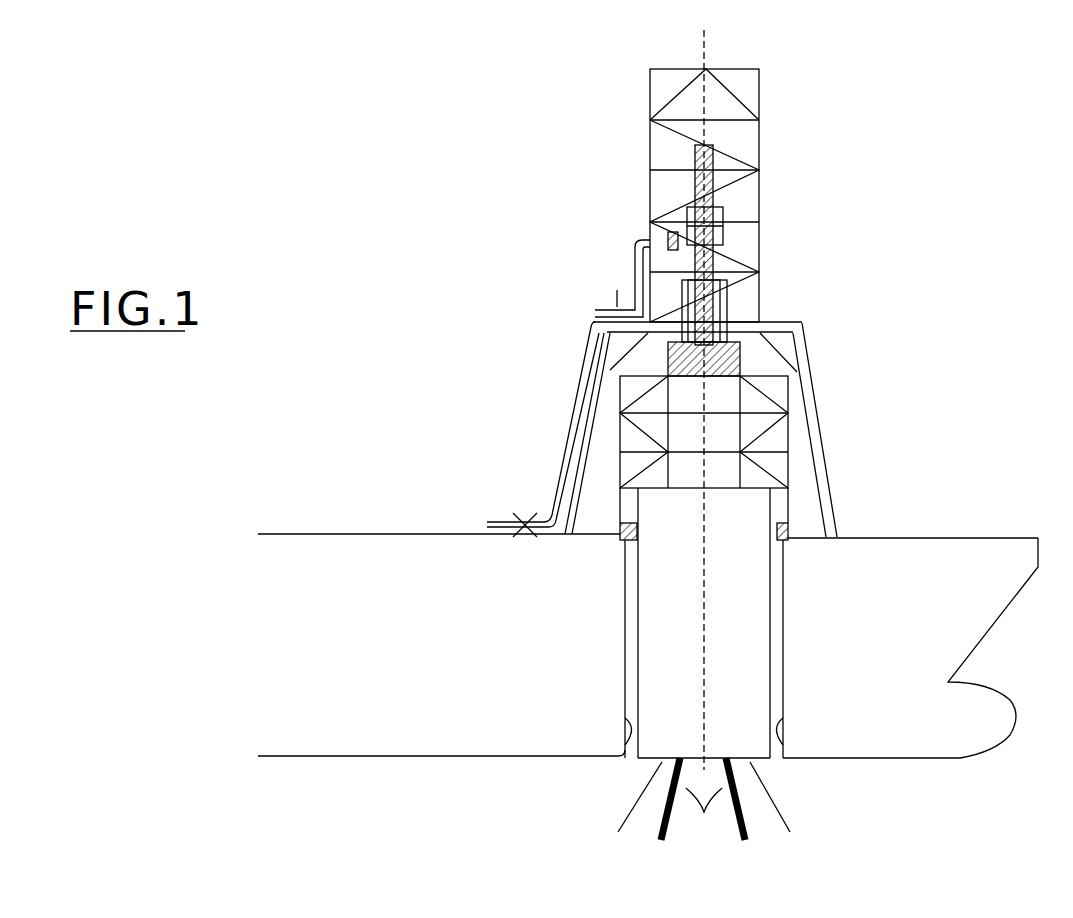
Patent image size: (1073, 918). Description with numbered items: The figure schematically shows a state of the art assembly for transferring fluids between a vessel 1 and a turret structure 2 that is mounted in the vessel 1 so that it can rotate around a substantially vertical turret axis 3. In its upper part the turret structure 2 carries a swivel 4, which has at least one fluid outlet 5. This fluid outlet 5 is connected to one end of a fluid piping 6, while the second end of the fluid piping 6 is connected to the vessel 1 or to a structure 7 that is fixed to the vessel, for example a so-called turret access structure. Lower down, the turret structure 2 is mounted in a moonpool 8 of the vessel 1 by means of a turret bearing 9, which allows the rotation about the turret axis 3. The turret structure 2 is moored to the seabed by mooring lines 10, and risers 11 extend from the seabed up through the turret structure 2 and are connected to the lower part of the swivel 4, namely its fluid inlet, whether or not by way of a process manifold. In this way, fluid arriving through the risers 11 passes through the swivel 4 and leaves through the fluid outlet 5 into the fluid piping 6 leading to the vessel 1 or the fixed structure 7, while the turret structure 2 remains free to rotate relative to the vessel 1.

The vessel 1 is at (312, 545).
The turret structure 2 is at (787, 441).
The turret axis 3 is at (709, 50).
The swivel 4 is at (725, 237).
The fluid outlet 5 is at (682, 232).
The fluid piping 6 is at (635, 259).
The structure 7 is at (800, 354).
The moonpool 8 is at (782, 610).
The turret bearing 9 is at (790, 530).
The mooring lines 10 is at (780, 810).
The risers 11 is at (704, 814).